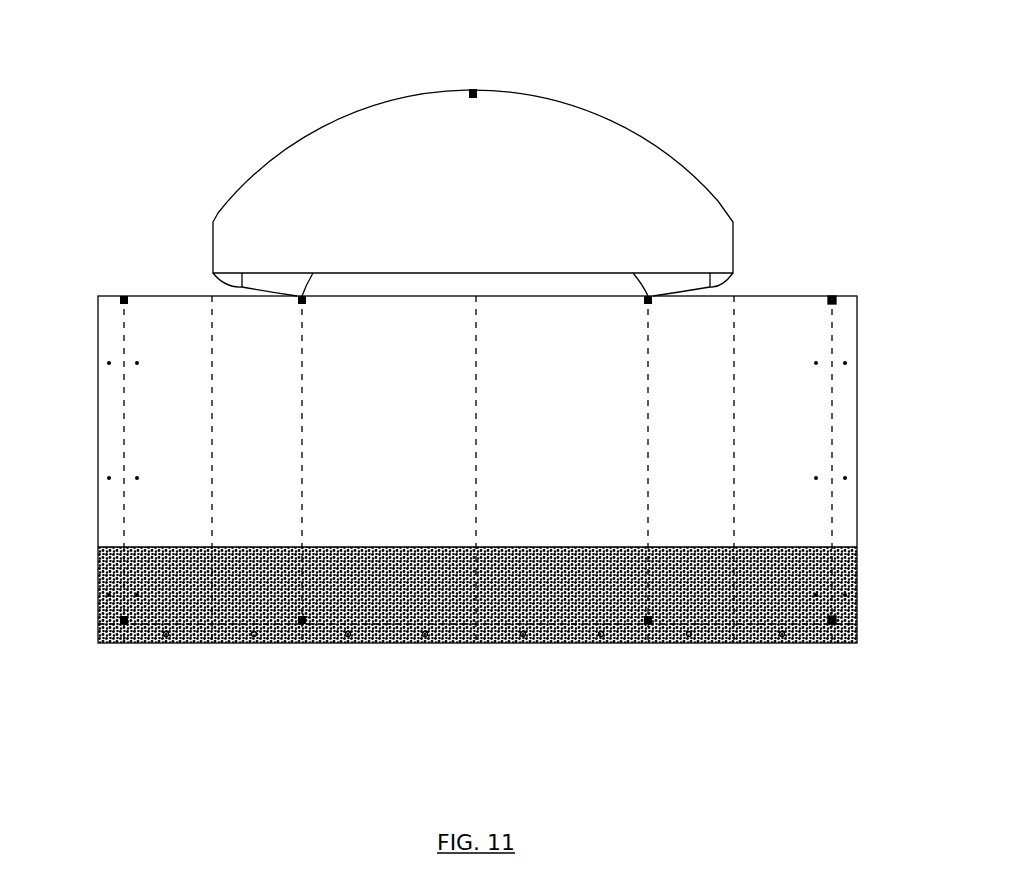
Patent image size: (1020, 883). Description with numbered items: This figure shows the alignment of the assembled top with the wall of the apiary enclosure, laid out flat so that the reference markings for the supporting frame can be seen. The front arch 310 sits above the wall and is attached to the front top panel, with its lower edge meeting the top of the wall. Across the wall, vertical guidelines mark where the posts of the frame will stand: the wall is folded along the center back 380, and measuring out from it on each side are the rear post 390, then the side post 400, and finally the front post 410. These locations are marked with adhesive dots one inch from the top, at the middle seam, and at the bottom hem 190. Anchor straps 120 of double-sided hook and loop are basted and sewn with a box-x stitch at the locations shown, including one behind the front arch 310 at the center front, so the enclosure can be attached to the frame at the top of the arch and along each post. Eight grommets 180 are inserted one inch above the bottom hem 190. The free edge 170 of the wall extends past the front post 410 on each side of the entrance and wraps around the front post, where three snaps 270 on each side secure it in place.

The anchor strap 120 is at (473, 88).
The front arch 310 is at (633, 162).
The free edge 170 is at (845, 420).
The bottom hem 190 is at (847, 624).
The snaps 270 is at (108, 480).
The front post 410 is at (124, 643).
The side post 400 is at (212, 643).
The rear post 390 is at (302, 643).
The center back 380 is at (476, 643).
The grommets 180 is at (601, 643).